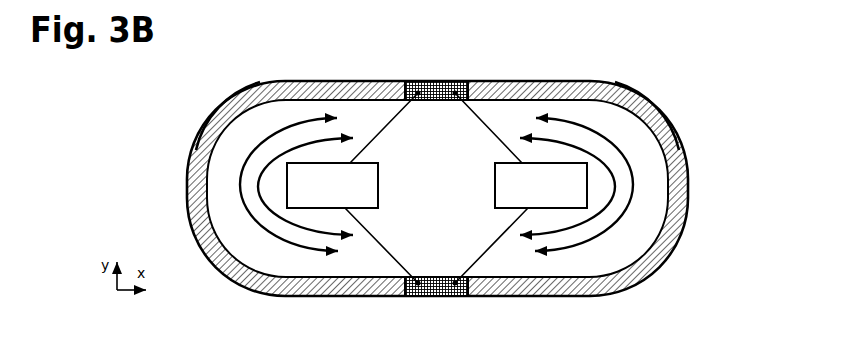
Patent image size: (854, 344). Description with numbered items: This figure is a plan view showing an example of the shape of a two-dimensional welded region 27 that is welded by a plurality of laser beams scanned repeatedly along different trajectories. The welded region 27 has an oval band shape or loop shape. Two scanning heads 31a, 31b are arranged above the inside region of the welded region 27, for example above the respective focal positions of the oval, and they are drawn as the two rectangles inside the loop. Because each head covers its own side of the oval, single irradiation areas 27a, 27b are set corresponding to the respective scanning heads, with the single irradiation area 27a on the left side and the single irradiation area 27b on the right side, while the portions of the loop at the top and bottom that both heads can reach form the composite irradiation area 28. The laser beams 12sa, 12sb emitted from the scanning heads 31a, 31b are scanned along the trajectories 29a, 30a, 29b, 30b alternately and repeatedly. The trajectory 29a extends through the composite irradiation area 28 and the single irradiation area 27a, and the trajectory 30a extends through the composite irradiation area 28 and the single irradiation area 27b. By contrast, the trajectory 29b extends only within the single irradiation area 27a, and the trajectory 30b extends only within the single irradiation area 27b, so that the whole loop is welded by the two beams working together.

The welded region 27 is at (645, 87).
The single irradiation area 27a is at (205, 143).
The single irradiation area 27b is at (667, 143).
The composite irradiation area 28 is at (463, 70).
The trajectory 29a is at (350, 126).
The trajectory 29b is at (310, 112).
The trajectory 30a is at (526, 125).
The trajectory 30b is at (572, 117).
The scanning head 31a is at (360, 187).
The scanning head 31b is at (513, 187).
The laser beam 12sa is at (387, 132).
The laser beam 12sb is at (482, 242).